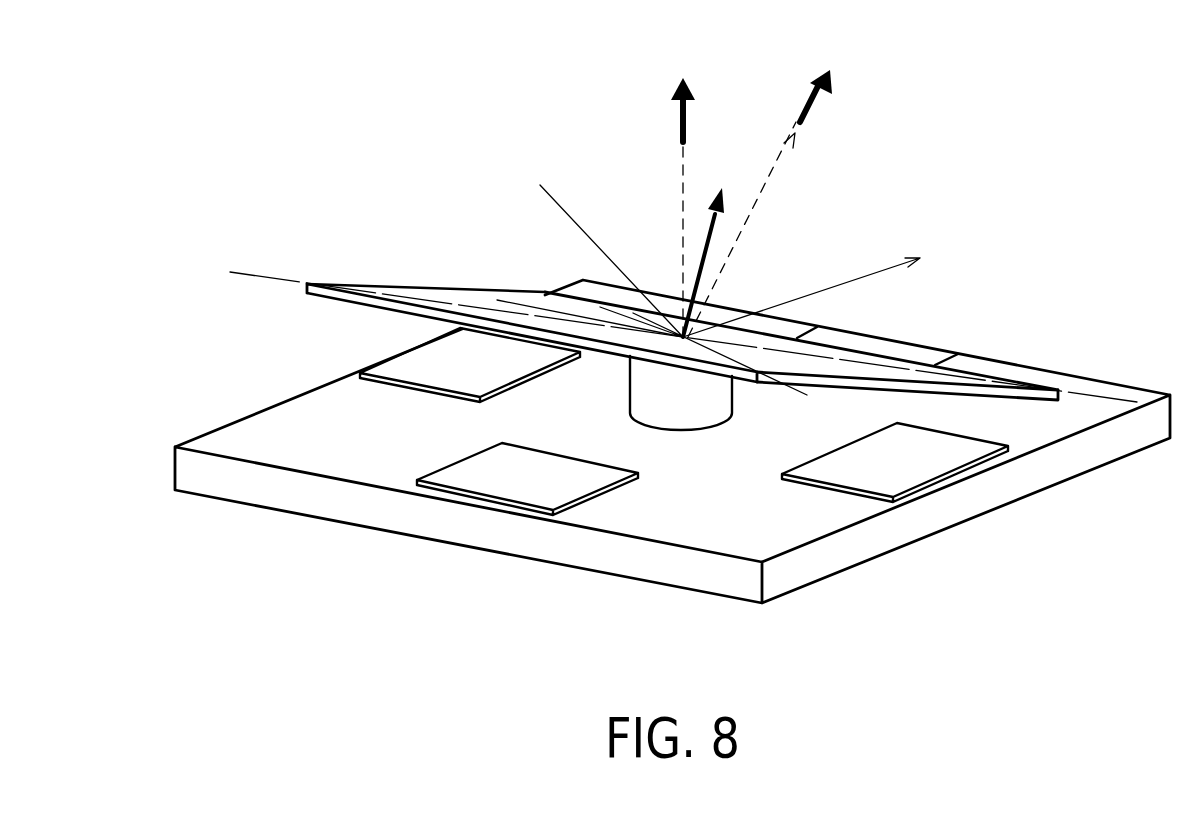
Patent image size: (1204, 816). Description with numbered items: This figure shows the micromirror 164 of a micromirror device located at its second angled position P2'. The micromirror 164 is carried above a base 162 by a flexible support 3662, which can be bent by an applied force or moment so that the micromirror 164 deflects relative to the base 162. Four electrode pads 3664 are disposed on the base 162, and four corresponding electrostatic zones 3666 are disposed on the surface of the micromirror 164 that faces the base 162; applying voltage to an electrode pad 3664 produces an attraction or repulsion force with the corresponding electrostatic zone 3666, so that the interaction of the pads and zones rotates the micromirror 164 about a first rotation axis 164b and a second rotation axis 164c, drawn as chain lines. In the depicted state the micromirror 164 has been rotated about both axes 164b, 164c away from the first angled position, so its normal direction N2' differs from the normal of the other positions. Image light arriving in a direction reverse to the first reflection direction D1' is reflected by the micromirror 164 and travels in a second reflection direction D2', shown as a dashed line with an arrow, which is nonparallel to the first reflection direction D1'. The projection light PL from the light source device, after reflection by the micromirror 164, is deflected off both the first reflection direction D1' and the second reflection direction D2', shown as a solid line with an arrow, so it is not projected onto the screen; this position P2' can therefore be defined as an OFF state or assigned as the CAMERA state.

The base 162 is at (893, 541).
The micromirror 164 is at (848, 353).
The first rotation axis 164b is at (588, 273).
The second rotation axis 164c is at (1092, 380).
The flexible support 3662 is at (682, 415).
The electrode pad 3664 is at (487, 485).
The electrostatic zone 3666 is at (593, 353).
The second angled position P2' is at (369, 229).
The projection light PL is at (839, 272).
The first reflection direction D1' is at (687, 187).
The second reflection direction D2' is at (777, 183).
The normal direction N2' is at (716, 245).